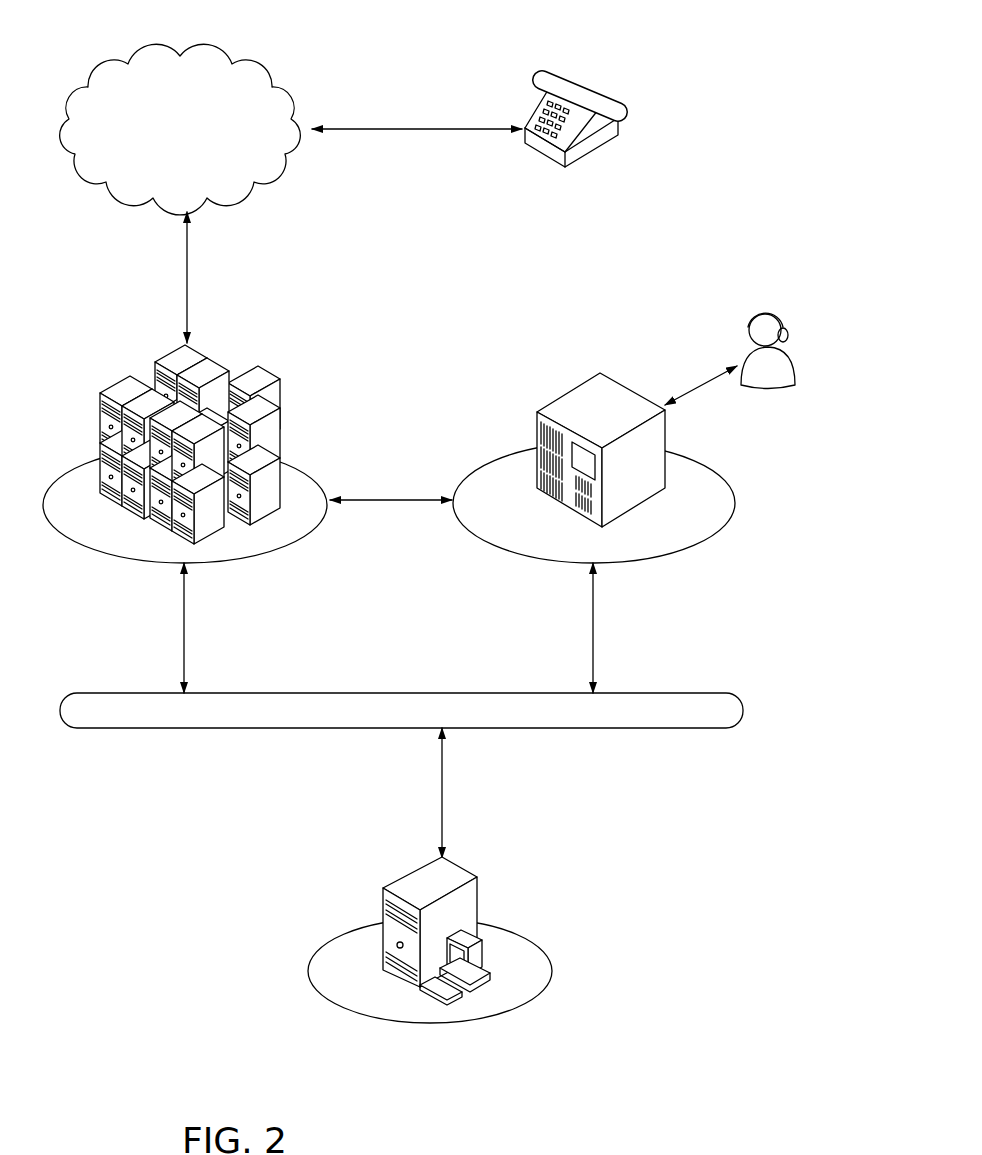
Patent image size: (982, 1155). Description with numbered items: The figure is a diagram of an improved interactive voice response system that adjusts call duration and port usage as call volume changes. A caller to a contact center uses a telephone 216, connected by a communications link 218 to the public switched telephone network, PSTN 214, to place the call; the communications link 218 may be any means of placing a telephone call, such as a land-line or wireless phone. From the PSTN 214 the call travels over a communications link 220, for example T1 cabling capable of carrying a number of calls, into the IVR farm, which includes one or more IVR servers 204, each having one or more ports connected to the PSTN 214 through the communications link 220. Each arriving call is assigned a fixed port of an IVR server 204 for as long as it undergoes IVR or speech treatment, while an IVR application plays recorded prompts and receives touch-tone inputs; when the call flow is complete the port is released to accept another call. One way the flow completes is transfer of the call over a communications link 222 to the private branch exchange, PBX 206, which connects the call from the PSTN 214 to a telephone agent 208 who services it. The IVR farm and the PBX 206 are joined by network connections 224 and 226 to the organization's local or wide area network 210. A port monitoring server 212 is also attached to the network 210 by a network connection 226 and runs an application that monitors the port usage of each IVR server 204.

The IVR server 204 is at (270, 397).
The private branch exchange (PBX) 206 is at (587, 392).
The telephone agent 208 is at (783, 326).
The network 210 is at (441, 693).
The port monitoring server 212 is at (397, 882).
The public switched telephone network (PSTN) 214 is at (166, 152).
The telephone 216 is at (588, 76).
The communications link 218 is at (425, 128).
The communications link 220 is at (187, 278).
The communications link 222 is at (393, 501).
The network connection 224 is at (184, 643).
The network connection 226 is at (442, 805).